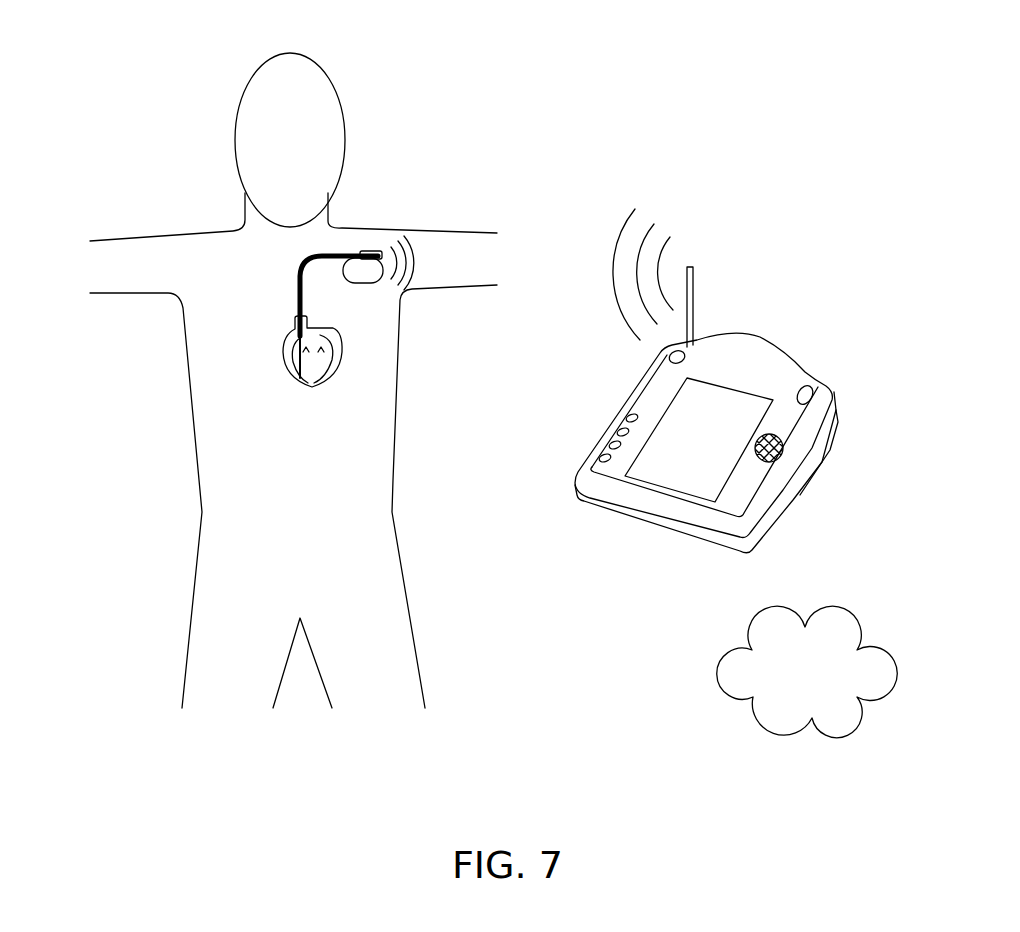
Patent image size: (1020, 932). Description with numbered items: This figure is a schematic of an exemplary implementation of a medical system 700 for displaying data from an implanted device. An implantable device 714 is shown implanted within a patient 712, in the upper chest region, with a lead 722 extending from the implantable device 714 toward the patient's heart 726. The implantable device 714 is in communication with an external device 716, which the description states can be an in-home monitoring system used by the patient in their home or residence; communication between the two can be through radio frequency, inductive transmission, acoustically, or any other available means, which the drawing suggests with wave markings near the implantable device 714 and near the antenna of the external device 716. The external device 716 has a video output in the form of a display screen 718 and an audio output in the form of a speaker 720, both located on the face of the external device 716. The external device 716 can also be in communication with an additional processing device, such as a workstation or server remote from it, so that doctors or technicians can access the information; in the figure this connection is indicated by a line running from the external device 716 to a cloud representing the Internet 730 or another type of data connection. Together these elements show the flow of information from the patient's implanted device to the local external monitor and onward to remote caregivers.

The medical system 700 is at (563, 163).
The patient 712 is at (162, 265).
The implantable device 714 is at (375, 273).
The external device 716 is at (745, 358).
The display screen 718 is at (662, 463).
The speaker 720 is at (783, 447).
The lead 722 is at (298, 277).
The heart 726 is at (317, 382).
The Internet 730 is at (797, 492).